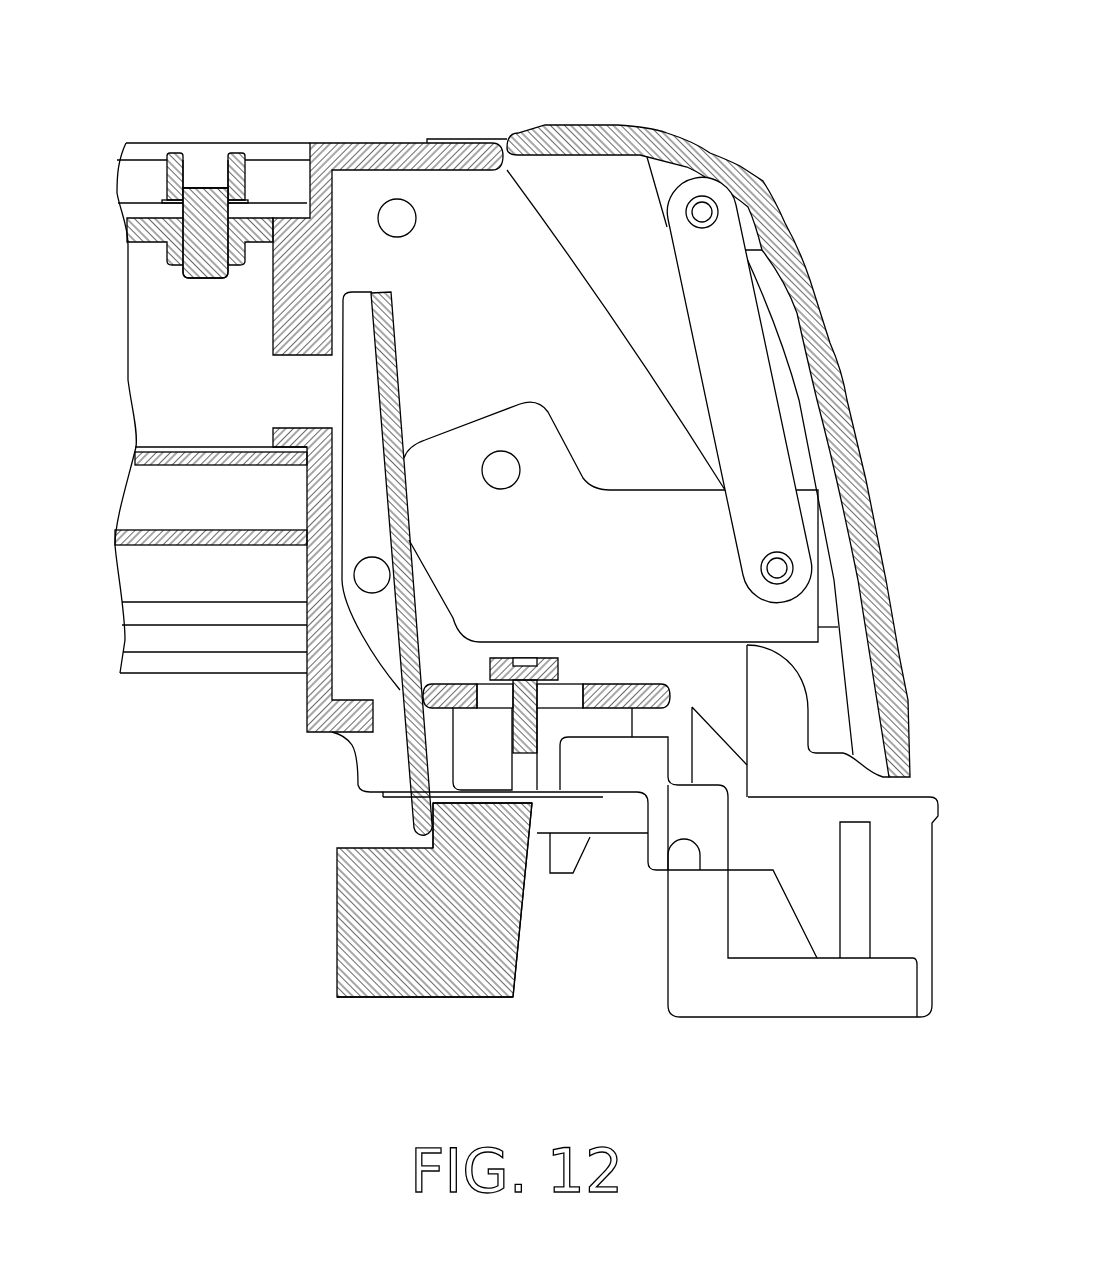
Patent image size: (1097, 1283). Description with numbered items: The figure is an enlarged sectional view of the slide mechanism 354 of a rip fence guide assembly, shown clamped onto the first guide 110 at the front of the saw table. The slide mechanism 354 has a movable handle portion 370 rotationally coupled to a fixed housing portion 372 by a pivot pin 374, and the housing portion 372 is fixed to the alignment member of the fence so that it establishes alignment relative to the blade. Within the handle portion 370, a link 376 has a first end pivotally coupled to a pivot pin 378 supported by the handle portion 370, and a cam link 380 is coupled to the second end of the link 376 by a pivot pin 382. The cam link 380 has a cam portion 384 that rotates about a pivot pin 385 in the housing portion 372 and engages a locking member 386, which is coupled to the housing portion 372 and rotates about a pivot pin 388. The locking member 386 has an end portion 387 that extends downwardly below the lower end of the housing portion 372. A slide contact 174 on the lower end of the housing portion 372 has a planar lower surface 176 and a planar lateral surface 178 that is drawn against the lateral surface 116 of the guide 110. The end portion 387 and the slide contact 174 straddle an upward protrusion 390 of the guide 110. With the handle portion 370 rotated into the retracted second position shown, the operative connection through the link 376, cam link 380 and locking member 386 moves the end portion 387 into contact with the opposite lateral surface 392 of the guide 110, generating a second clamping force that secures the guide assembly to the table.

The slide mechanism 354 is at (882, 88).
The housing portion 372 is at (392, 138).
The pivot pin 374 is at (450, 139).
The handle portion 370 is at (657, 120).
The link 376 is at (768, 357).
The pivot pin 378 is at (712, 200).
The cam link 380 is at (818, 627).
The pivot pin 382 is at (790, 568).
The cam portion 384 is at (470, 612).
The pivot pin 385 is at (500, 470).
The locking member 386 is at (357, 506).
The end portion 387 is at (425, 838).
The pivot pin 388 is at (363, 579).
The slide contact 174 is at (617, 837).
The lower surface 176 is at (400, 800).
The lateral surface 178 is at (514, 826).
The lateral surface 116 is at (517, 977).
The upward protrusion 390 is at (466, 834).
The lateral surface 392 is at (467, 832).
The guide 110 is at (359, 1005).